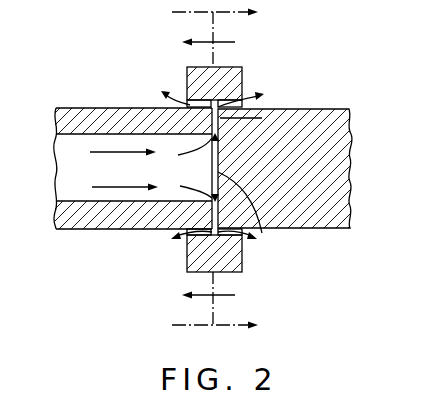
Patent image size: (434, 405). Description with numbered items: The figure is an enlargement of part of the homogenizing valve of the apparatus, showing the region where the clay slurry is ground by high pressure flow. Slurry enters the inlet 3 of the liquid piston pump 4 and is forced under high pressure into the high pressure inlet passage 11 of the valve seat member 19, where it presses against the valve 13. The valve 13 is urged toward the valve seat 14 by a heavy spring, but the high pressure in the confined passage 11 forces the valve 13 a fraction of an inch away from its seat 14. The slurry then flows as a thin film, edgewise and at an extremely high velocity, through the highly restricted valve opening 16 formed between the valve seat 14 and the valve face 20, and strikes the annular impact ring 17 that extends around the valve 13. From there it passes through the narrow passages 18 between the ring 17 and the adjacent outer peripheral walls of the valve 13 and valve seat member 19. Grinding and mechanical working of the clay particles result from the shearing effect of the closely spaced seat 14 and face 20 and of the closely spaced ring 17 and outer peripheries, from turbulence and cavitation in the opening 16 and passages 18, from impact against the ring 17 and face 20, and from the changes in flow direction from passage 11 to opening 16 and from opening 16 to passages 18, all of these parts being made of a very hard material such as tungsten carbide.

The inlet 3 is at (215, 169).
The liquid piston pump 4 is at (207, 168).
The high pressure inlet passage 11 is at (80, 176).
The valve 13 is at (305, 120).
The valve seat 14 is at (188, 230).
The valve opening 16 is at (262, 115).
The annular impact ring 17 is at (242, 68).
The narrow passages 18 is at (212, 107).
The valve seat member 19 is at (110, 220).
The valve face 20 is at (262, 233).